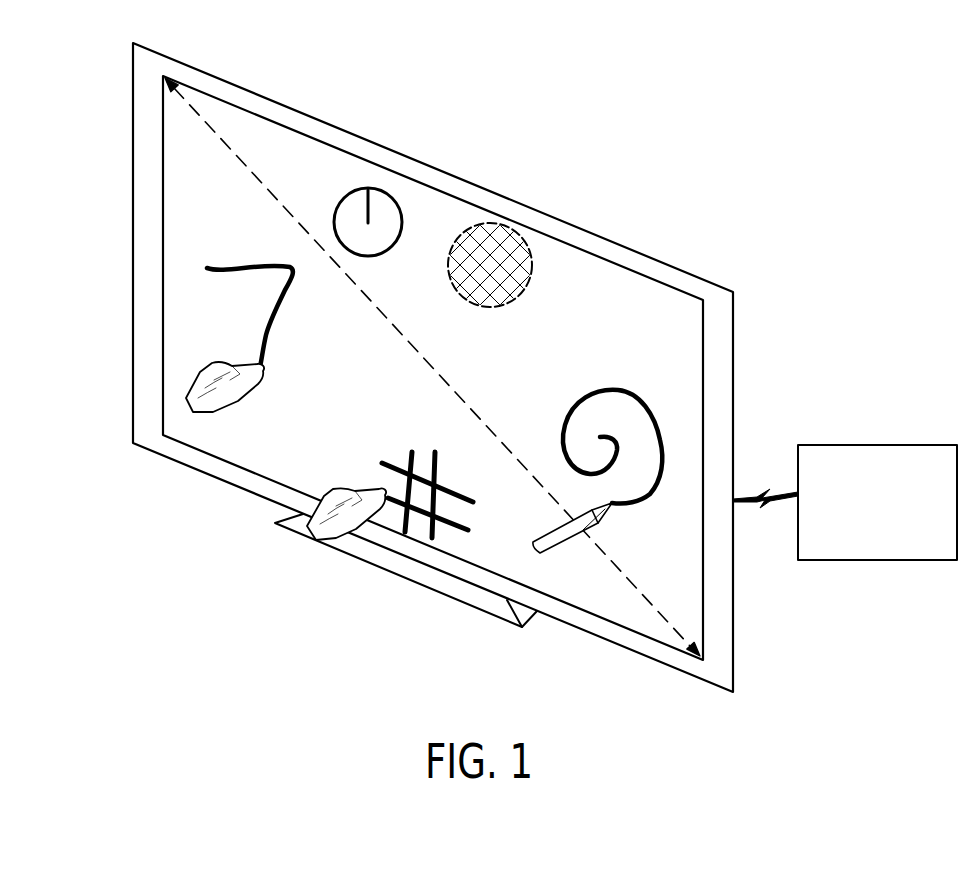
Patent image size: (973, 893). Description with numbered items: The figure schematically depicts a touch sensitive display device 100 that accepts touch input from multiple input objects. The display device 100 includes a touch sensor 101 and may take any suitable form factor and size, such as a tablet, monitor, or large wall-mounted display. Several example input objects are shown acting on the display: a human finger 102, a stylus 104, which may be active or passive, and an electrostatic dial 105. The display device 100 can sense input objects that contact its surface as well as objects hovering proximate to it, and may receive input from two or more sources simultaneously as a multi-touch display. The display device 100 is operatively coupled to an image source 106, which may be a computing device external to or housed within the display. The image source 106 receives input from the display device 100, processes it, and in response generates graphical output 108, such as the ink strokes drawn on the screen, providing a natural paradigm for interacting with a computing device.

The touch sensitive display device 100 is at (507, 92).
The touch sensor 101 is at (521, 240).
The human finger 102 is at (259, 382).
The stylus 104 is at (540, 553).
The electrostatic dial 105 is at (380, 188).
The image source 106 is at (845, 502).
The graphical output 108 is at (255, 262).